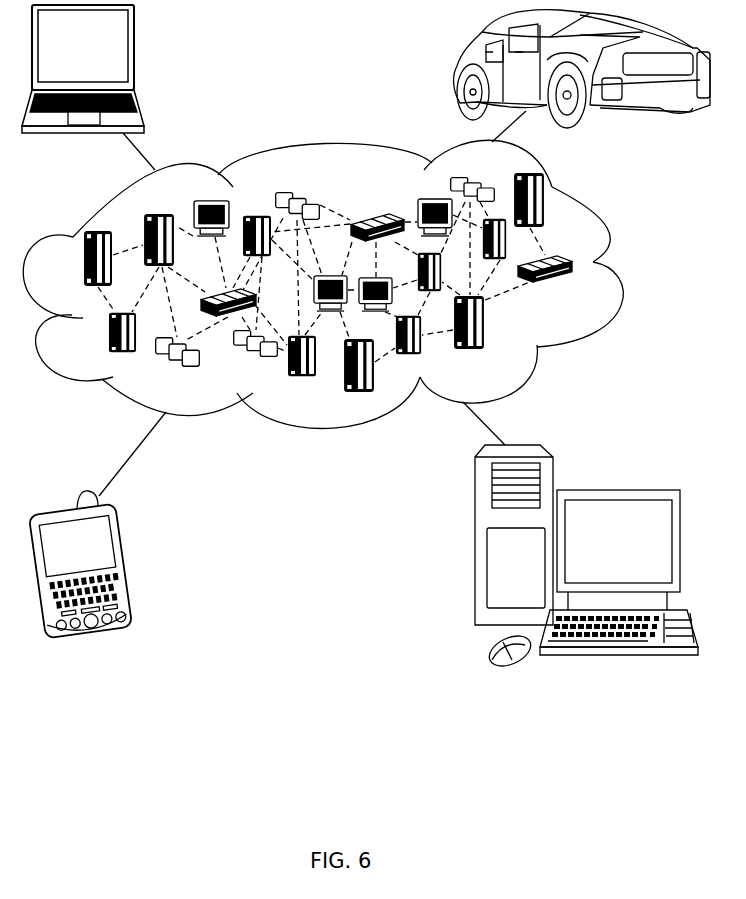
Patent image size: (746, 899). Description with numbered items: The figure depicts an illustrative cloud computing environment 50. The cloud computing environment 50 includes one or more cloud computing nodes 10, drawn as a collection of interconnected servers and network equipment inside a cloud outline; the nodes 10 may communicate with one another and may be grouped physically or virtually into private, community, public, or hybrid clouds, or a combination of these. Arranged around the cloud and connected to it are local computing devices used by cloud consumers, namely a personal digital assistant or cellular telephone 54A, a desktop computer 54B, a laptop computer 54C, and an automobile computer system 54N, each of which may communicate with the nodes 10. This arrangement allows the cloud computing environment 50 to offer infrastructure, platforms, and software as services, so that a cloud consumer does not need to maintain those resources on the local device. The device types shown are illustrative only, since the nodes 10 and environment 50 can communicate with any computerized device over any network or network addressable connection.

The cloud computing nodes 10 is at (583, 294).
The cloud computing environment 50 is at (621, 266).
The personal digital assistant or cellular telephone 54A is at (125, 563).
The desktop computer 54B is at (617, 490).
The laptop computer 54C is at (134, 52).
The automobile computer system 54N is at (460, 68).